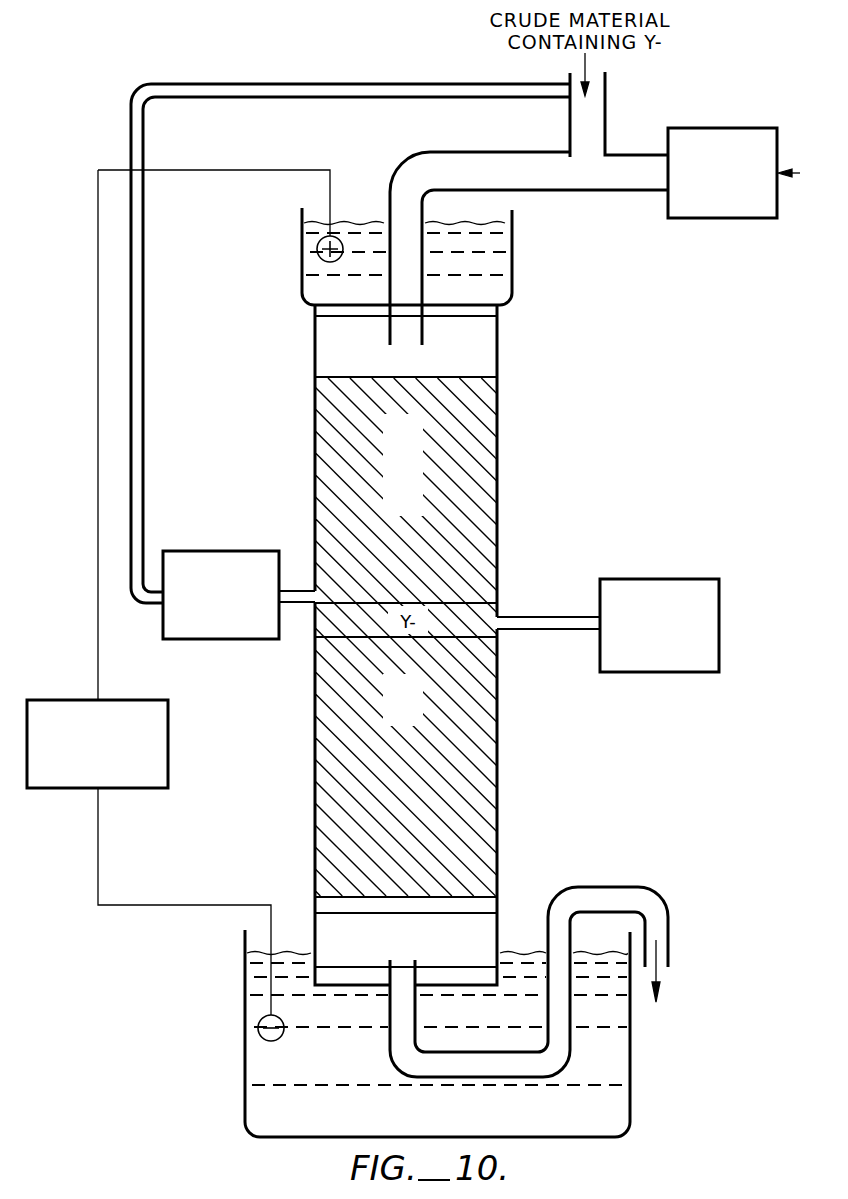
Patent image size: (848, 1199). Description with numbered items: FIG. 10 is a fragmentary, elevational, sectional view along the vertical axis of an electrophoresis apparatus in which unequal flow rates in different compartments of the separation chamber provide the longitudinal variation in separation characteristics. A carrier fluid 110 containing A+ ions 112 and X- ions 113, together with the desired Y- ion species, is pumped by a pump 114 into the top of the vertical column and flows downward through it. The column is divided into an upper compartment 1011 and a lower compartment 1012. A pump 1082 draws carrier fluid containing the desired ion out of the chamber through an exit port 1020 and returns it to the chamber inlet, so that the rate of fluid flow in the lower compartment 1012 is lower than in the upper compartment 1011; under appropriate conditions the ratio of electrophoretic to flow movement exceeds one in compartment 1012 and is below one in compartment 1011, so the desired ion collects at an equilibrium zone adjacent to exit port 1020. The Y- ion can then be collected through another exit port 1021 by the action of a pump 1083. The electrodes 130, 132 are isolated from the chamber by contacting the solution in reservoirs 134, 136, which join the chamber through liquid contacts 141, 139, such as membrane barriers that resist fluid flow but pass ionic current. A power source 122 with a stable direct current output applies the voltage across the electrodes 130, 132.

The carrier fluid 110 is at (583, 194).
The A+ ions 112 is at (483, 160).
The X- ions 113 is at (549, 160).
The pump 114 is at (740, 128).
The electrical power source 122 is at (132, 700).
The electrode 130 is at (317, 249).
The electrode 132 is at (257, 1027).
The reservoir 134 is at (495, 290).
The reservoir 136 is at (258, 1100).
The liquid contact 139 is at (362, 983).
The liquid contact 141 is at (313, 307).
The compartment 1011 is at (483, 470).
The compartment 1012 is at (480, 745).
The exit port 1020 is at (313, 605).
The exit port 1021 is at (498, 620).
The pump 1082 is at (217, 551).
The pump 1083 is at (683, 579).